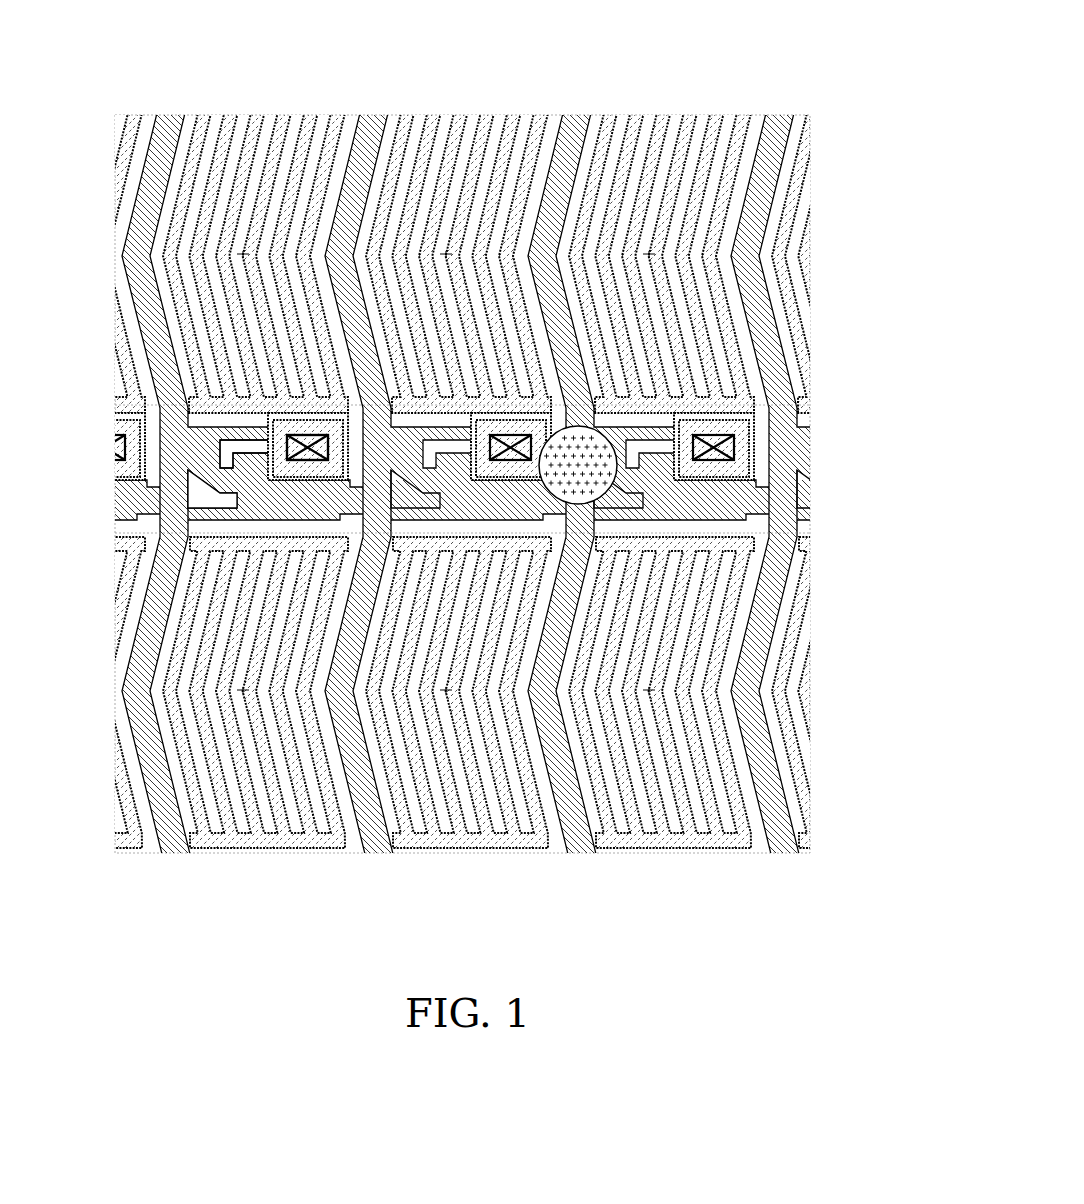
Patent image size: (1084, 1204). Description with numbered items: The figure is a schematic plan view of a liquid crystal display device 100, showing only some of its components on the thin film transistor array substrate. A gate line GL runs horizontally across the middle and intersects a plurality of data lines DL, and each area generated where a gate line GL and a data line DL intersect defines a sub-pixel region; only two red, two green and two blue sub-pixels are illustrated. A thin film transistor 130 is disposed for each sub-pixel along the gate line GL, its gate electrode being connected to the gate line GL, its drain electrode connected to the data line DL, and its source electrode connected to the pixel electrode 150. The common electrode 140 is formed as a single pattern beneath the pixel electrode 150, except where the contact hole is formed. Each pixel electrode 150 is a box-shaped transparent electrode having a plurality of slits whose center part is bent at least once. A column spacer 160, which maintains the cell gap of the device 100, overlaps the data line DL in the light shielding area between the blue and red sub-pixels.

The liquid crystal display device 100 is at (486, 478).
The gate line GL is at (126, 497).
The data line DL is at (367, 833).
The thin film transistor 130 is at (208, 516).
The common electrode 140 is at (302, 482).
The pixel electrode 150 is at (185, 761).
The column spacer 160 is at (593, 427).